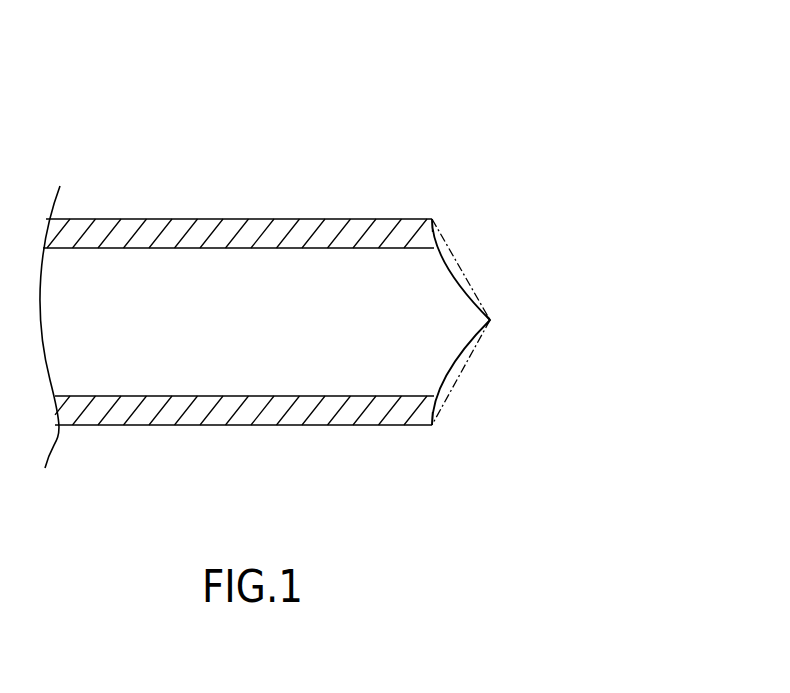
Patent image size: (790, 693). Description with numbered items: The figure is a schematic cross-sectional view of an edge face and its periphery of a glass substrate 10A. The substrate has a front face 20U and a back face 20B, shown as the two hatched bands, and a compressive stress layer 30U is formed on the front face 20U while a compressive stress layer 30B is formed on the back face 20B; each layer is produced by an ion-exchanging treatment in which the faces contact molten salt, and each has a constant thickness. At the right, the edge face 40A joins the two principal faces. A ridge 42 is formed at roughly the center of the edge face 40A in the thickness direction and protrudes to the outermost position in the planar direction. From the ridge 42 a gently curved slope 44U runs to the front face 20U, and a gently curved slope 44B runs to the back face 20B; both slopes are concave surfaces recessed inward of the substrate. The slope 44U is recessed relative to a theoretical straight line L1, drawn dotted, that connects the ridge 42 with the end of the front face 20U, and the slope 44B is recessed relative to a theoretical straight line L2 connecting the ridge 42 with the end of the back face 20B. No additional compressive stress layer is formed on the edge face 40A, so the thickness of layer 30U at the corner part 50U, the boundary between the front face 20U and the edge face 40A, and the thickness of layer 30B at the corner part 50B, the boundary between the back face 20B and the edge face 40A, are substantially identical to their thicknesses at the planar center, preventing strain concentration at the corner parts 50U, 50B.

The glass substrate 10A is at (613, 33).
The front face 20U is at (280, 219).
The back face 20B is at (272, 425).
The compressive stress layer 30U is at (158, 228).
The compressive stress layer 30B is at (143, 415).
The corner part 50U is at (433, 218).
The corner part 50B is at (432, 425).
The edge face 40A is at (600, 235).
The slope 44U is at (457, 279).
The slope 44B is at (459, 363).
The ridge 42 is at (490, 320).
The straight line L1 is at (450, 252).
The straight line L2 is at (452, 396).